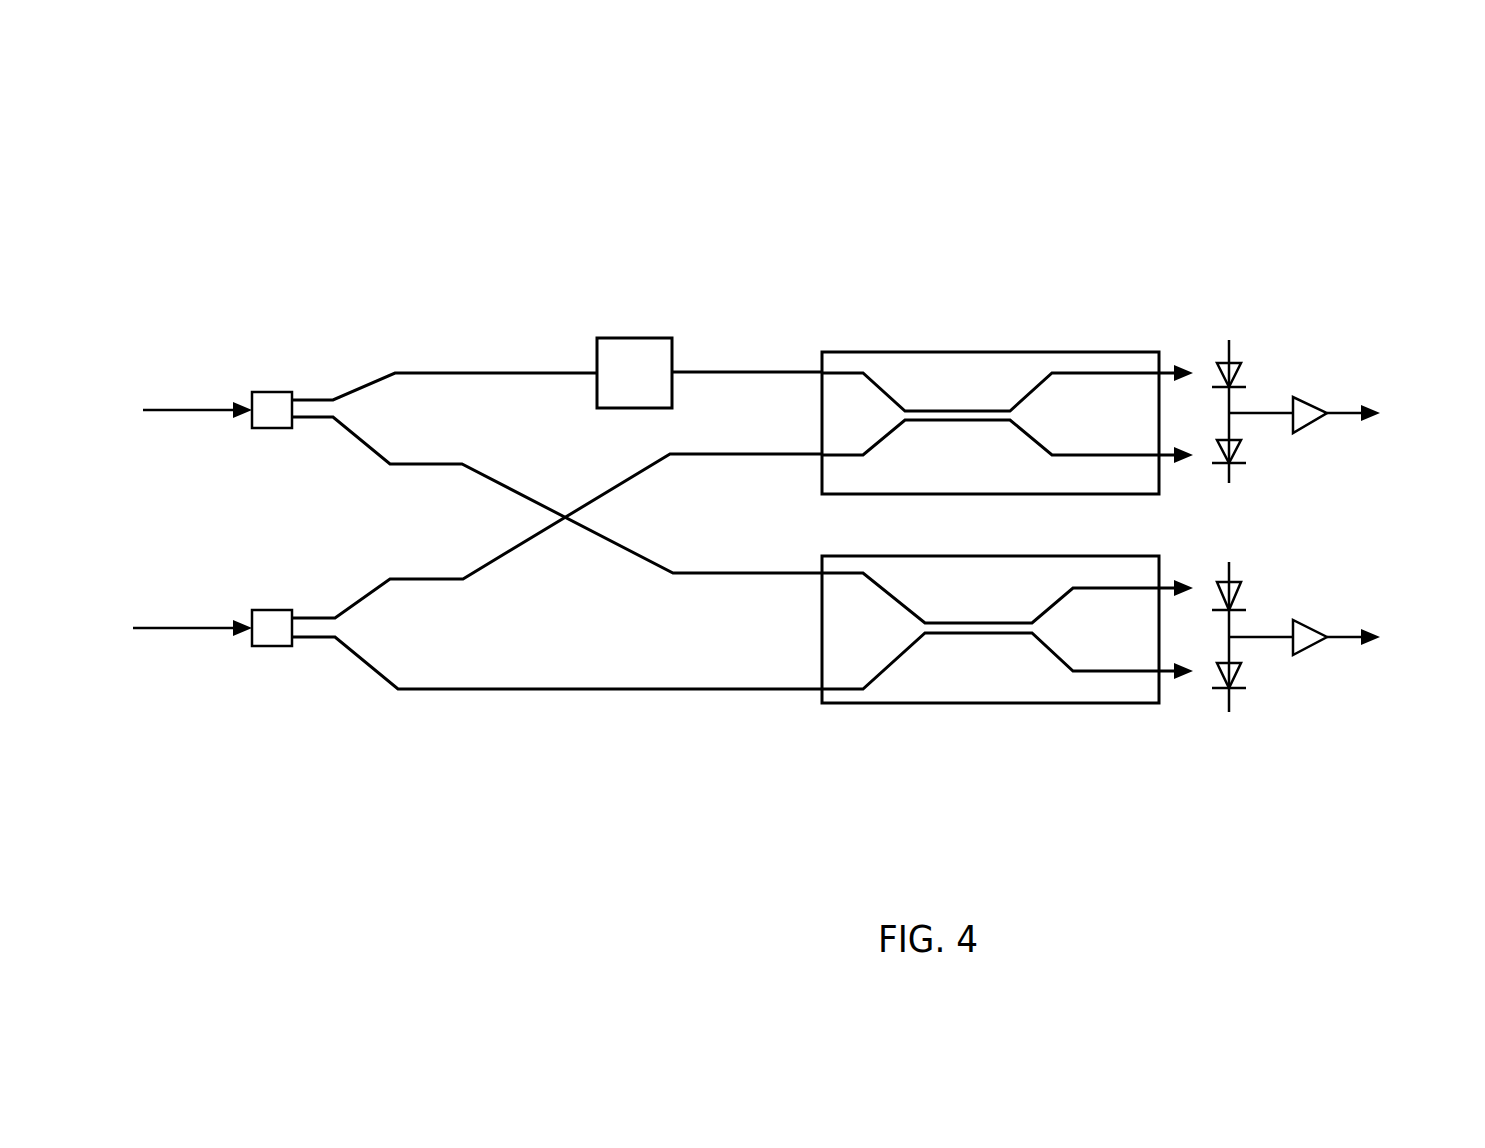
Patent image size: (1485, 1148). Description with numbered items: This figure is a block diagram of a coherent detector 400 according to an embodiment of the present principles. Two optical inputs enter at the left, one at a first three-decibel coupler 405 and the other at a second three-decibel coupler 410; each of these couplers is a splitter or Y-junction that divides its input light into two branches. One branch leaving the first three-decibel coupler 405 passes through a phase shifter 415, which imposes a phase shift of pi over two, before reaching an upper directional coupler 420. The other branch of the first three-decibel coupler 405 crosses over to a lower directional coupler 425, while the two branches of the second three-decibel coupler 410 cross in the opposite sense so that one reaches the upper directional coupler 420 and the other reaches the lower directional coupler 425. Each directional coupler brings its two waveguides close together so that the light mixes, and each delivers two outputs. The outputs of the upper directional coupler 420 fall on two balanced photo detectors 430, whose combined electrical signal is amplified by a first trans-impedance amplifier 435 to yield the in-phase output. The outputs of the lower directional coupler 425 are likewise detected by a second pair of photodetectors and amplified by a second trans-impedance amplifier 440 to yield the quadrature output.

The coherent detector 400 is at (1092, 147).
The first 3 dB coupler 405 is at (272, 392).
The second 3 dB coupler 410 is at (272, 610).
The phase shifter 415 is at (634, 338).
The upper directional coupler 420 is at (990, 352).
The lower directional coupler 425 is at (990, 703).
The balanced photo detectors 430 is at (1227, 323).
The first trans-impedance amplifier 435 is at (1306, 432).
The second trans-impedance amplifier 440 is at (1306, 622).